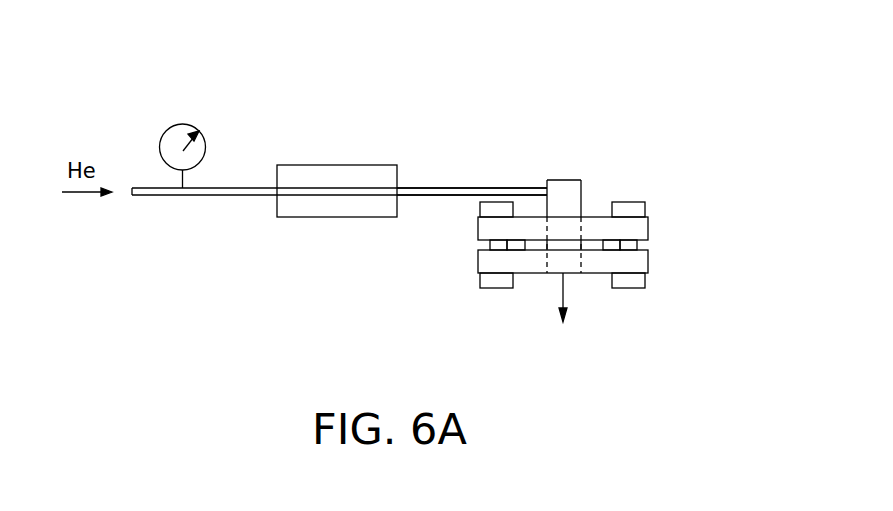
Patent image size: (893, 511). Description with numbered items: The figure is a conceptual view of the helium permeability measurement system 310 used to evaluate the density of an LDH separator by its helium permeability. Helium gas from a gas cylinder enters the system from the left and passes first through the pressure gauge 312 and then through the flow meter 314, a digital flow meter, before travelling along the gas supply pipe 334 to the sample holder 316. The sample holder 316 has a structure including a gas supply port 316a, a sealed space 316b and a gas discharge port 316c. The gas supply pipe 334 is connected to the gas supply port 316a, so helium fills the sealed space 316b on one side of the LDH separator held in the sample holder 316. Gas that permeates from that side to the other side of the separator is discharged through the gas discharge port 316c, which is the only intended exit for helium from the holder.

The helium permeability measurement system 310 is at (601, 79).
The pressure gauge 312 is at (173, 125).
The flow meter 314 is at (343, 184).
The sample holder 316 is at (630, 158).
The gas supply port 316a is at (580, 228).
The sealed space 316b is at (570, 247).
The gas discharge port 316c is at (582, 260).
The gas supply pipe 334 is at (443, 187).